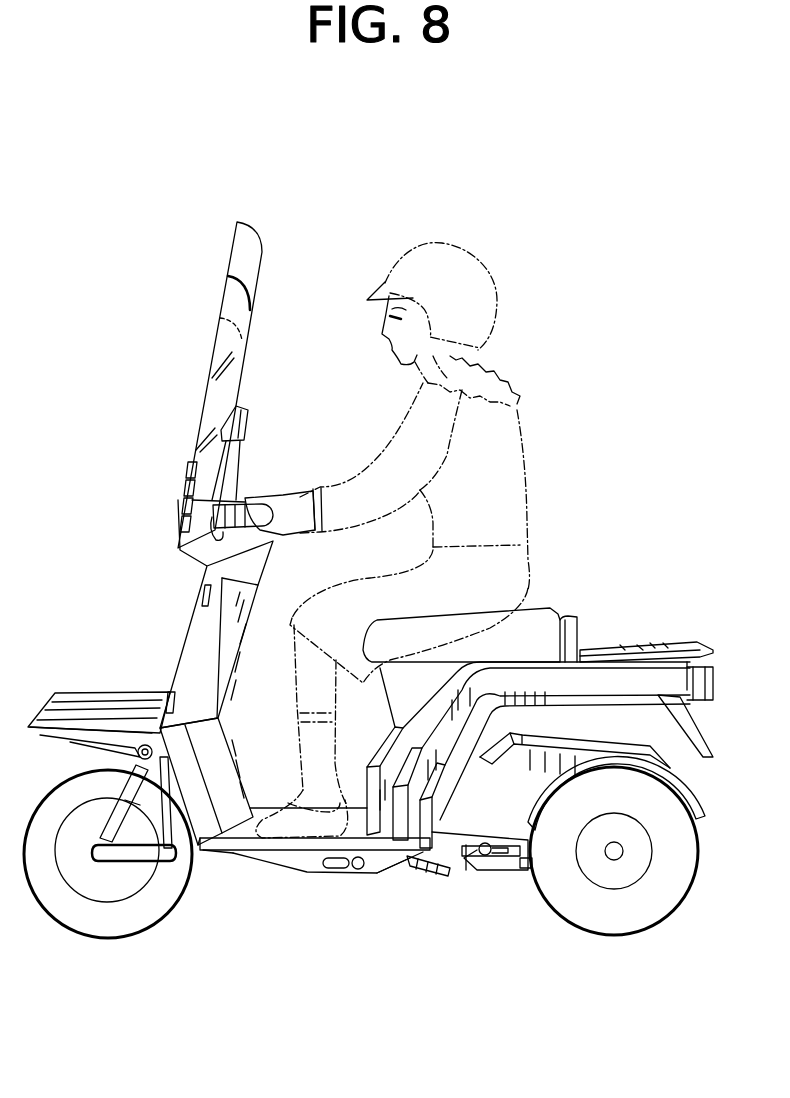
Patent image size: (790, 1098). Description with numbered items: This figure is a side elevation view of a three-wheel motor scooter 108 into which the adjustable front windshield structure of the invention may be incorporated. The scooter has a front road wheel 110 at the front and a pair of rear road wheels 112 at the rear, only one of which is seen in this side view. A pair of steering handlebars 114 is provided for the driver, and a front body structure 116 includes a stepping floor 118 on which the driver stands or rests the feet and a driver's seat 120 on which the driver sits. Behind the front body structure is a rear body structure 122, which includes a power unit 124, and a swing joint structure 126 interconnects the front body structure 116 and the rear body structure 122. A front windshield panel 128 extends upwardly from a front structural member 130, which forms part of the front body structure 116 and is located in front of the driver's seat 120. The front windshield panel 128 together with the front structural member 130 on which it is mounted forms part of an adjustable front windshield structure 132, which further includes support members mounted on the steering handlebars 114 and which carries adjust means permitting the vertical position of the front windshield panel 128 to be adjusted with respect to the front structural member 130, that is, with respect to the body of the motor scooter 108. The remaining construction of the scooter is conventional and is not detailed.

The three-wheel motor scooter 108 is at (140, 612).
The front road wheel 110 is at (150, 934).
The rear road wheel 112 is at (598, 935).
The steering handlebar 114 is at (285, 530).
The front body structure 116 is at (252, 877).
The stepping floor 118 is at (222, 851).
The driver's seat 120 is at (558, 608).
The rear body structure 122 is at (684, 770).
The power unit 124 is at (612, 738).
The swing joint structure 126 is at (408, 878).
The front windshield panel 128 is at (214, 333).
The front structural member 130 is at (175, 548).
The adjustable front windshield structure 132 is at (178, 500).